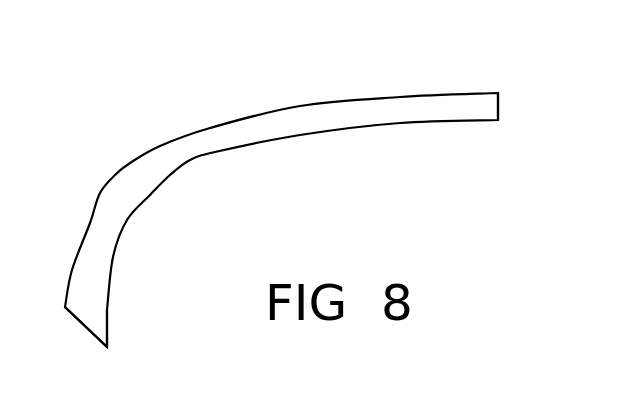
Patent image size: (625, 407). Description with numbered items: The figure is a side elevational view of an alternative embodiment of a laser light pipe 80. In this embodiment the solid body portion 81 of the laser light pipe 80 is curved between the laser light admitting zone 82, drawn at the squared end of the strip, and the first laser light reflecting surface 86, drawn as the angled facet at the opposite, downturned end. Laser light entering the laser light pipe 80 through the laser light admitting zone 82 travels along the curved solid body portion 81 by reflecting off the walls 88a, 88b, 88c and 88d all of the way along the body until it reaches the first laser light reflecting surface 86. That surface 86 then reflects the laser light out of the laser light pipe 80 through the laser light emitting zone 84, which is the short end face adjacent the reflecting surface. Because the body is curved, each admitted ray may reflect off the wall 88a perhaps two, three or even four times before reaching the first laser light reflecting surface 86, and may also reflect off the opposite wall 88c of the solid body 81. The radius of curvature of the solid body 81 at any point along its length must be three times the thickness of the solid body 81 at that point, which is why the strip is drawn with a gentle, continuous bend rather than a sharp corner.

The laser light pipe 80 is at (360, 80).
The solid body portion 81 is at (238, 117).
The laser light admitting zone 82 is at (500, 107).
The laser light emitting zone 84 is at (108, 309).
The first laser light reflecting surface 86 is at (83, 327).
The wall 88a is at (128, 163).
The wall 88b is at (80, 228).
The wall 88c is at (127, 219).
The wall 88d is at (190, 159).